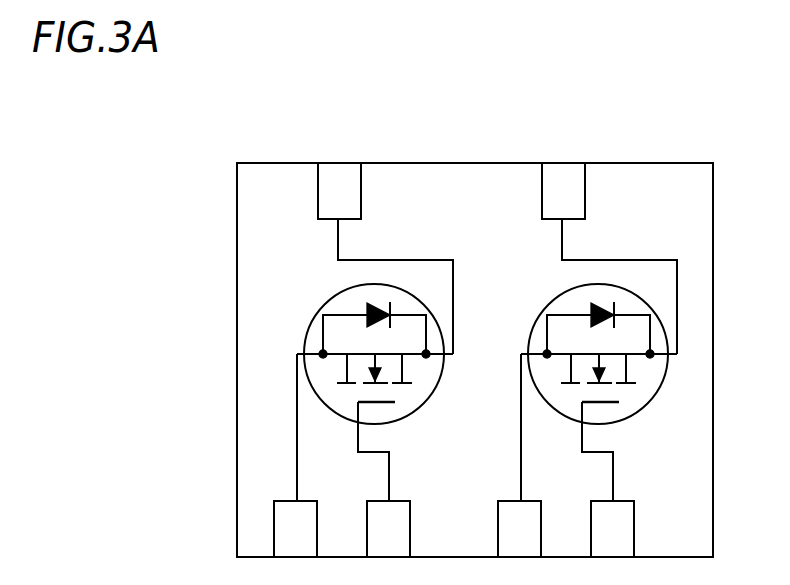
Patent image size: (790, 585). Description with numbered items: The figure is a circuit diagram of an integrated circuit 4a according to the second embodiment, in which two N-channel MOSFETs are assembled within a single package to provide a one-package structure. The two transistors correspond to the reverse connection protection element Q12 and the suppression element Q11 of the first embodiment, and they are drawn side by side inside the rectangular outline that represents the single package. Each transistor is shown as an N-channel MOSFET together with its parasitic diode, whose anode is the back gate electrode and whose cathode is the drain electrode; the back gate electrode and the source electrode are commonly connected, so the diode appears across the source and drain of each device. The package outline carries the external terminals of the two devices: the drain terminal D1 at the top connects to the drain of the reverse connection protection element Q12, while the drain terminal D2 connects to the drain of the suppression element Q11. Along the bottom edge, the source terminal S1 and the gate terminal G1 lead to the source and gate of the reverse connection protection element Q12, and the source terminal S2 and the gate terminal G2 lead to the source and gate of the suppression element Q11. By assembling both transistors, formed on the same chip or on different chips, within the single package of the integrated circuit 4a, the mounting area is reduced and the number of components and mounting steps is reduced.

The integrated circuit 4a is at (670, 162).
The reverse connection protection element Q12 is at (332, 299).
The suppression element Q11 is at (556, 299).
The drain terminal D1 is at (385, 243).
The drain terminal D2 is at (609, 243).
The source terminal S1 is at (295, 469).
The source terminal S2 is at (519, 469).
The gate terminal G1 is at (384, 493).
The gate terminal G2 is at (608, 493).